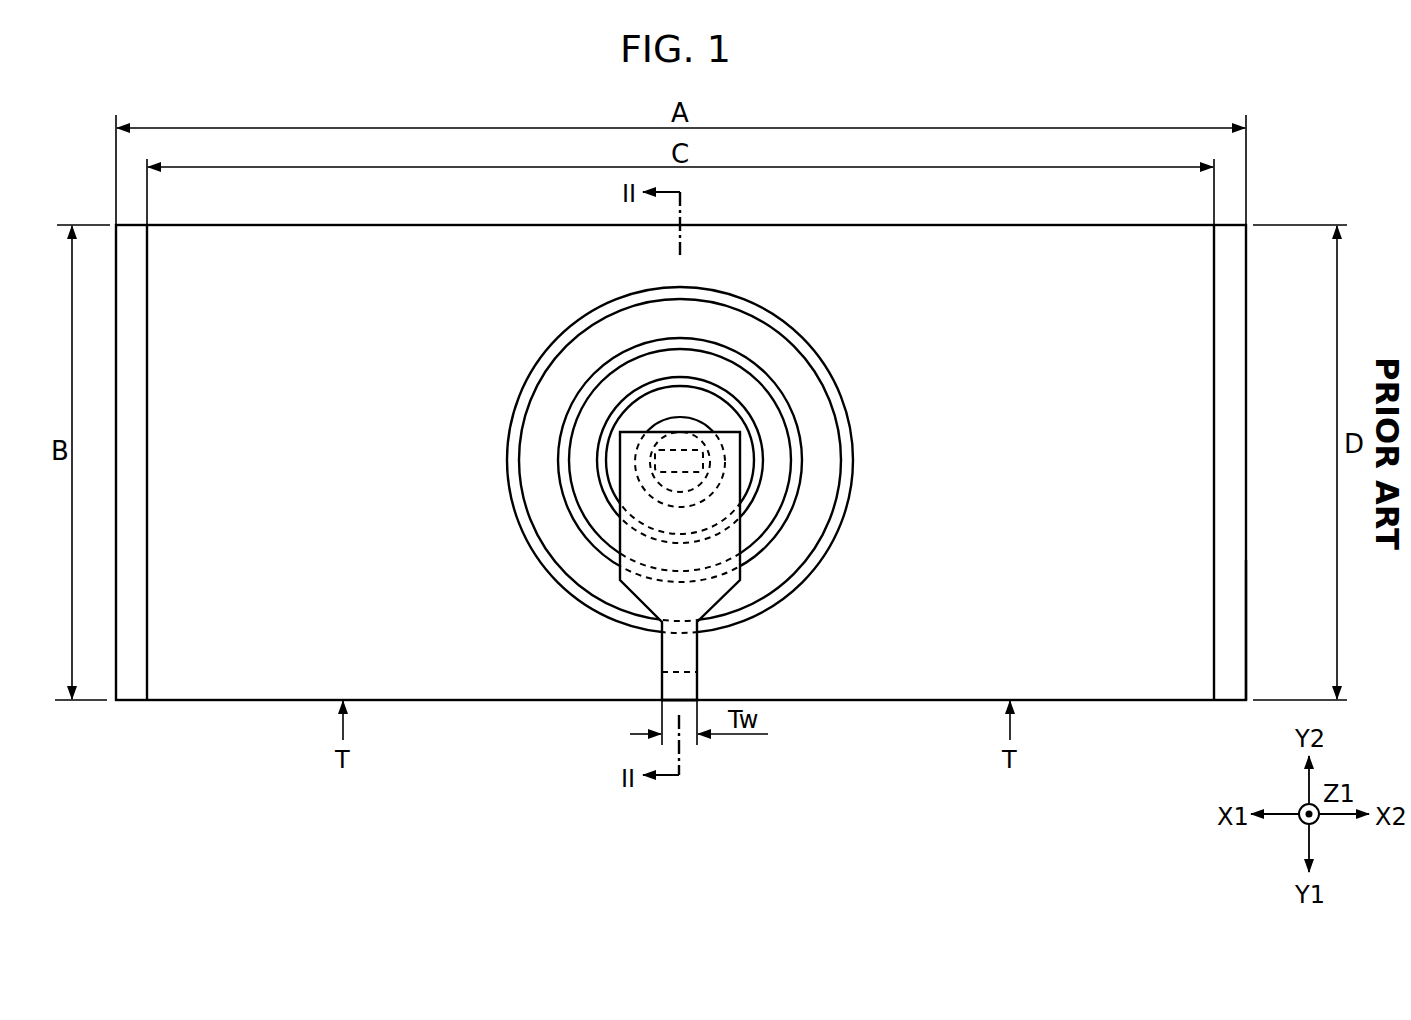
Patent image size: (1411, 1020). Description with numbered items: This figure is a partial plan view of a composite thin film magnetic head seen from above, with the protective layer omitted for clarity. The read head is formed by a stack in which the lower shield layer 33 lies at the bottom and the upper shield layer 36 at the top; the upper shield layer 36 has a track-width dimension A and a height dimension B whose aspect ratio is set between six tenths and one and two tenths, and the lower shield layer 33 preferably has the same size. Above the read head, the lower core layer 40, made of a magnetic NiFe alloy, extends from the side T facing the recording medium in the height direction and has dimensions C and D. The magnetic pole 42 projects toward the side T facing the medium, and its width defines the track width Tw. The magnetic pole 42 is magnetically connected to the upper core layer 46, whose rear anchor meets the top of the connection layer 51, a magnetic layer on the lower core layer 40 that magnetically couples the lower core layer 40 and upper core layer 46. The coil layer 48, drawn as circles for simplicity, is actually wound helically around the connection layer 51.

The lower shield layer 33 is at (1248, 610).
The upper shield layer 36 is at (1238, 340).
The lower core layer 40 is at (1210, 270).
The magnetic pole 42 is at (655, 692).
The upper core layer 46 is at (704, 652).
The coil layer 48 is at (548, 339).
The connection layer 51 is at (652, 455).